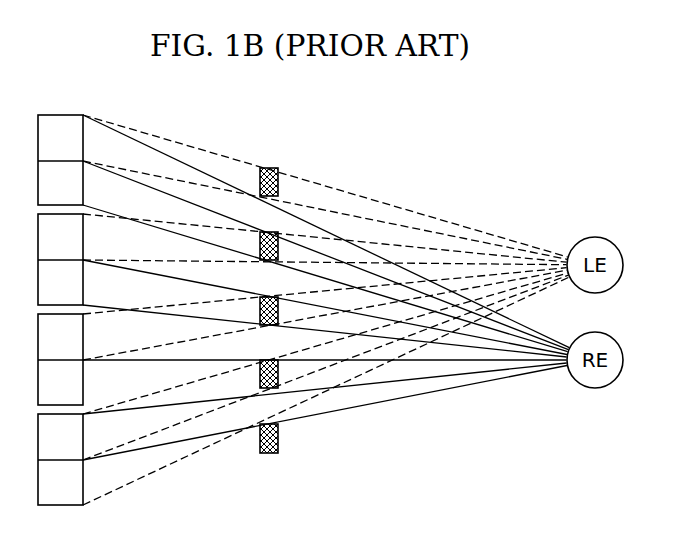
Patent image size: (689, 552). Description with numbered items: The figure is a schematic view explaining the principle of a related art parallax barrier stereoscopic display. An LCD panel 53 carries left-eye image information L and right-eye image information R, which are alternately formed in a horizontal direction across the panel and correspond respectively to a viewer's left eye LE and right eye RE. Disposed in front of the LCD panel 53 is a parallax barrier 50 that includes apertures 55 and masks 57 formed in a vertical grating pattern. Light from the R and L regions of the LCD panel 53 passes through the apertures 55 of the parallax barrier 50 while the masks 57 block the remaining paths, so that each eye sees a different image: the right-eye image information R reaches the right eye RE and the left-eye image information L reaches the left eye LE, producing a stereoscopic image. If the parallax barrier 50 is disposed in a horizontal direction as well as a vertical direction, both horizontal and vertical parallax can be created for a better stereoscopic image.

The parallax barrier 50 is at (285, 347).
The LCD panel 53 is at (63, 505).
The apertures 55 is at (263, 410).
The masks 57 is at (259, 443).